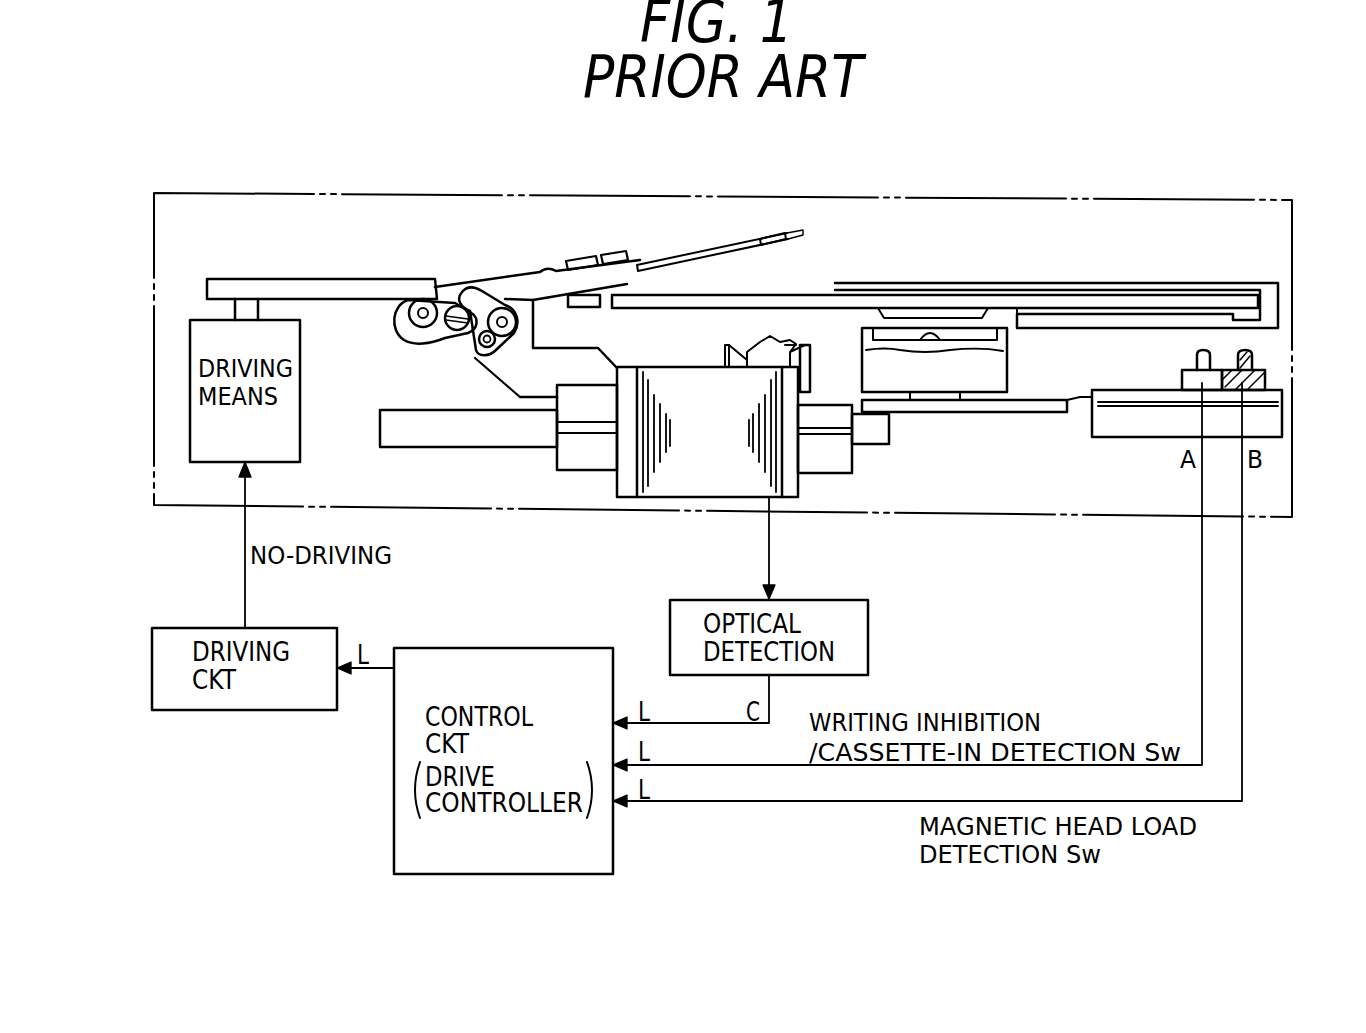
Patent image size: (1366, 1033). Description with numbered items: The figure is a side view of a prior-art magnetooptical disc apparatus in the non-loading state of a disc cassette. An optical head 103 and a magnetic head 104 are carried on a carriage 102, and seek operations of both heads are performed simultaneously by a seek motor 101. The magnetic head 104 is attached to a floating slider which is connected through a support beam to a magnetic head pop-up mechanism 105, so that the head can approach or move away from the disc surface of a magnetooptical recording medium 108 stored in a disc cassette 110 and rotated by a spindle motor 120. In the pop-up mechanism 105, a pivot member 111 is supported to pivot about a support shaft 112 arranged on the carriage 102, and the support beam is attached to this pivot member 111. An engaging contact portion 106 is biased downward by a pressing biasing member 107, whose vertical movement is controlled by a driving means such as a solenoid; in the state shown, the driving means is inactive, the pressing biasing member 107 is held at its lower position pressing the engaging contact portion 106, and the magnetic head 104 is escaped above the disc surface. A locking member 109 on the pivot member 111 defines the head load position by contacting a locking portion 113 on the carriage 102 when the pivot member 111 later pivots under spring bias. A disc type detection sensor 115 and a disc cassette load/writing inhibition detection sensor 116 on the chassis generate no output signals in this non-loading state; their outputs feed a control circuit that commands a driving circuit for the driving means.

The seek motor 101 is at (718, 487).
The carriage 102 is at (527, 381).
The optical head 103 is at (777, 357).
The magnetic head 104 is at (680, 256).
The magnetic head pop-up mechanism 105 is at (600, 220).
The engaging contact portion 106 is at (440, 300).
The pressing biasing member 107 is at (343, 279).
The magnetooptical recording medium 108 is at (720, 295).
The locking member 109 is at (447, 332).
The disc cassette 110 is at (1165, 283).
The pivot member 111 is at (547, 271).
The support shaft 112 is at (480, 358).
The locking portion 113 is at (472, 293).
The disc type detection sensor 115 is at (1267, 380).
The disc cassette load/writing inhibition detection sensor 116 is at (1190, 380).
The spindle motor 120 is at (970, 381).